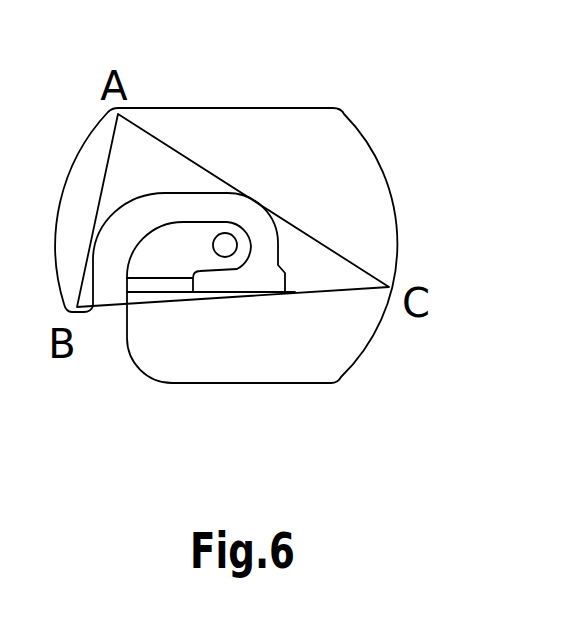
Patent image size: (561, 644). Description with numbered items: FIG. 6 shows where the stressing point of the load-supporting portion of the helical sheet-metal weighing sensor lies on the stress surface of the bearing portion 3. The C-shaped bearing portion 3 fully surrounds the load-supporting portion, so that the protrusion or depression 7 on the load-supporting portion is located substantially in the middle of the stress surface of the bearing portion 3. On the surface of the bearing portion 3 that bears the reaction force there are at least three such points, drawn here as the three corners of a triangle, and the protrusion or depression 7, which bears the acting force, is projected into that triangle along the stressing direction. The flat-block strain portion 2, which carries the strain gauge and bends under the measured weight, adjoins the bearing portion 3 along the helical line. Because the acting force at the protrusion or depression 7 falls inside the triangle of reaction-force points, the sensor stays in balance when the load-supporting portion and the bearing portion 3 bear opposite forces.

The strain portion 2 is at (232, 333).
The bearing portion 3 is at (283, 133).
The protrusion or depression 7 is at (225, 245).